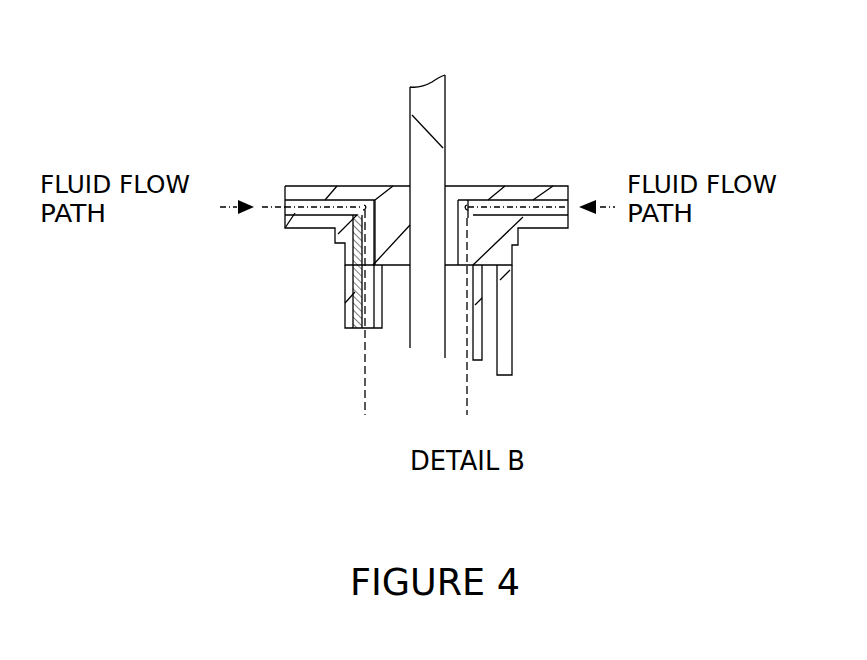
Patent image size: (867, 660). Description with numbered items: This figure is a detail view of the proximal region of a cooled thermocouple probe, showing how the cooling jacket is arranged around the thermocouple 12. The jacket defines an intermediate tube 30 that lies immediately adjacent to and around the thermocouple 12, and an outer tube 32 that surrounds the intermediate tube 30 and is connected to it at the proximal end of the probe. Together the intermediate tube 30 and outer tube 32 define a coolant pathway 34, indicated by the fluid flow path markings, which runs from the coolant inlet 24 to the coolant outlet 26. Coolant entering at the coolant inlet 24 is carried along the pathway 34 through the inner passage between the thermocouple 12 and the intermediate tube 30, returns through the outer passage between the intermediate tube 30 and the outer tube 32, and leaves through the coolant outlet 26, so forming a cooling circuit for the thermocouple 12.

The thermocouple 12 is at (420, 325).
The coolant inlet 24 is at (568, 228).
The coolant outlet 26 is at (285, 228).
The intermediate tube 30 is at (345, 328).
The outer tube 32 is at (477, 352).
The coolant pathway 34 is at (335, 207).